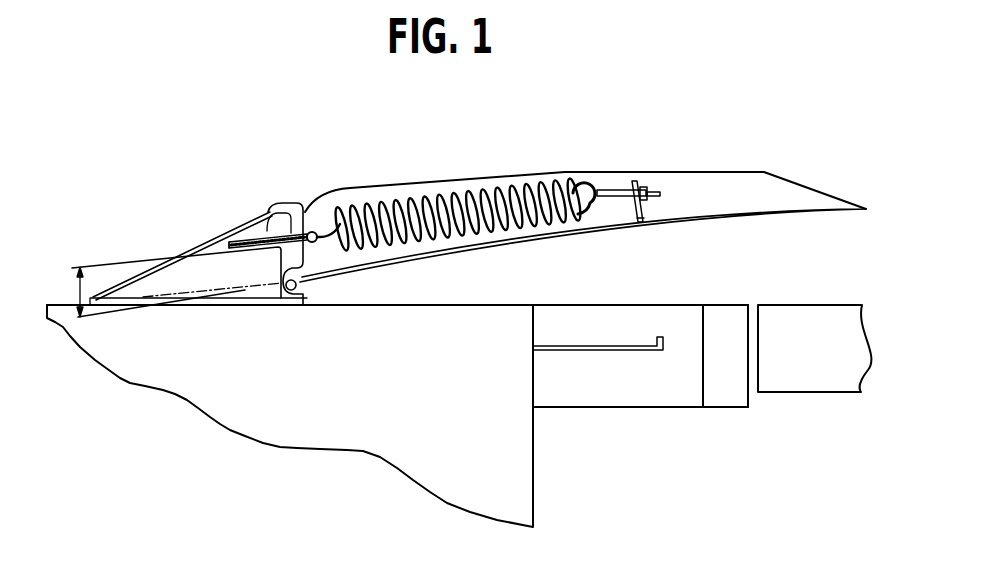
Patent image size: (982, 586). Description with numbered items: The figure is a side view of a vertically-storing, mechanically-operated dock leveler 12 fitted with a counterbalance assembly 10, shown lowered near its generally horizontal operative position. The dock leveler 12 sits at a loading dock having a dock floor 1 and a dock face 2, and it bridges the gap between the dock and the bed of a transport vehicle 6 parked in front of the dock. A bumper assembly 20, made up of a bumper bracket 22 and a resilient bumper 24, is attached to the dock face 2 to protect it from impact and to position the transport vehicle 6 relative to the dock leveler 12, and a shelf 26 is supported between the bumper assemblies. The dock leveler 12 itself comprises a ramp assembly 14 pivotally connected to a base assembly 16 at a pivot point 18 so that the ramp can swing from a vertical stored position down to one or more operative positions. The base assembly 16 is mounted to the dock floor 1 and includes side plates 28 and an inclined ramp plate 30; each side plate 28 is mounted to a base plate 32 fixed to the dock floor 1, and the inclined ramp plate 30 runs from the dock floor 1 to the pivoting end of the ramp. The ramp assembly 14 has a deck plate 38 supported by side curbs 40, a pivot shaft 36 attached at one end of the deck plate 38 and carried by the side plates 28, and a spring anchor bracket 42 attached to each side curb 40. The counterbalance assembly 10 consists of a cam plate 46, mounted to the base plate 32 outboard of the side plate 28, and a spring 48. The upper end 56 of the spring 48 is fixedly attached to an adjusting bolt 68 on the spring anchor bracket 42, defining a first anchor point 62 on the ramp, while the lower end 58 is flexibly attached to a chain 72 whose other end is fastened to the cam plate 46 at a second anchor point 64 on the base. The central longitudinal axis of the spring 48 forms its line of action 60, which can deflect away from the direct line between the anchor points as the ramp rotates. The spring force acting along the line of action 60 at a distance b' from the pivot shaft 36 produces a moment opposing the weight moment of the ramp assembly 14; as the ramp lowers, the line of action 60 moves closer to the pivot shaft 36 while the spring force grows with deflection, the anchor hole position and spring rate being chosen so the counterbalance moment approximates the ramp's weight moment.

The dock floor 1 is at (452, 303).
The dock face 2 is at (535, 498).
The transport vehicle 6 is at (770, 314).
The counterbalance assembly 10 is at (270, 92).
The dock leveler 12 is at (815, 137).
The ramp assembly 14 is at (585, 173).
The base assembly 16 is at (182, 250).
The pivot point 18 is at (344, 283).
The bumper assembly 20 is at (640, 327).
The bumper bracket 22 is at (577, 315).
The resilient bumper 24 is at (717, 316).
The shelf 26 is at (612, 352).
The side plate 28 is at (182, 250).
The inclined ramp plate 30 is at (220, 288).
The base plate 32 is at (257, 307).
The pivot shaft 36 is at (300, 282).
The deck plate 38 is at (497, 235).
The side curb 40 is at (362, 188).
The spring anchor bracket 42 is at (646, 212).
The cam plate 46 is at (273, 208).
The spring 48 is at (566, 177).
The upper end of spring 56 is at (594, 188).
The lower end of spring 58 is at (312, 231).
The line of action 60 is at (480, 200).
The first anchor point 62 is at (609, 186).
The second anchor point 64 is at (228, 244).
The adjusting bolt 68 is at (629, 182).
The chain 72 is at (253, 240).